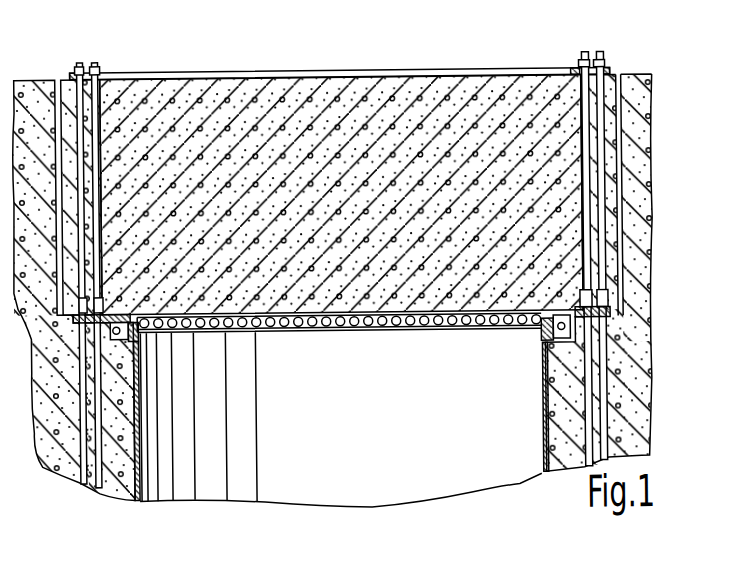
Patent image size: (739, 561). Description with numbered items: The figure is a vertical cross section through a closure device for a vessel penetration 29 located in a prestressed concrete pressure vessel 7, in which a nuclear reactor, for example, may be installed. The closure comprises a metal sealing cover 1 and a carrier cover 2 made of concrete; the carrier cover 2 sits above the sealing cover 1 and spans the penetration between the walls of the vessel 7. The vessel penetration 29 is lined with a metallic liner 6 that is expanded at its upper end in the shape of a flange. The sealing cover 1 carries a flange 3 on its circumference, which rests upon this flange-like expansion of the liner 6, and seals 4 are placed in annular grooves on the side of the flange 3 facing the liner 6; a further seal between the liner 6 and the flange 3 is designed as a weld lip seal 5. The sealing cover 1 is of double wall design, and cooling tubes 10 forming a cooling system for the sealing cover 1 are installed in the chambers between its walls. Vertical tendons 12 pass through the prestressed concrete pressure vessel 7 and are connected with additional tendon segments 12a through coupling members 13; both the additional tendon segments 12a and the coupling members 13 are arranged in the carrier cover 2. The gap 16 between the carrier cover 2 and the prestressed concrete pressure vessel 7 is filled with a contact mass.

The sealing cover 1 is at (325, 331).
The carrier cover 2 is at (300, 94).
The flange 3 is at (150, 319).
The seals 4 is at (117, 340).
The weld lip seal 5 is at (133, 330).
The metallic liner 6 is at (142, 475).
The prestressed concrete pressure vessel 7 is at (36, 94).
The cooling tubes 10 is at (391, 331).
The vertical tendons 12 is at (588, 380).
The additional tendon segments 12a is at (602, 54).
The coupling members 13 is at (590, 302).
The gap 16 is at (583, 289).
The vessel penetration 29 is at (355, 459).